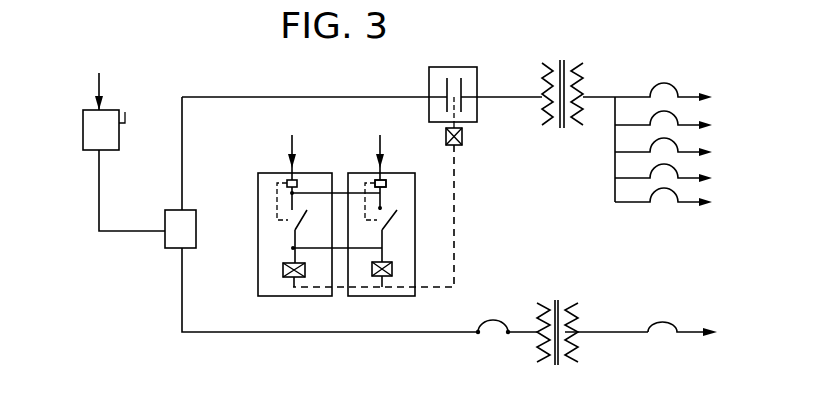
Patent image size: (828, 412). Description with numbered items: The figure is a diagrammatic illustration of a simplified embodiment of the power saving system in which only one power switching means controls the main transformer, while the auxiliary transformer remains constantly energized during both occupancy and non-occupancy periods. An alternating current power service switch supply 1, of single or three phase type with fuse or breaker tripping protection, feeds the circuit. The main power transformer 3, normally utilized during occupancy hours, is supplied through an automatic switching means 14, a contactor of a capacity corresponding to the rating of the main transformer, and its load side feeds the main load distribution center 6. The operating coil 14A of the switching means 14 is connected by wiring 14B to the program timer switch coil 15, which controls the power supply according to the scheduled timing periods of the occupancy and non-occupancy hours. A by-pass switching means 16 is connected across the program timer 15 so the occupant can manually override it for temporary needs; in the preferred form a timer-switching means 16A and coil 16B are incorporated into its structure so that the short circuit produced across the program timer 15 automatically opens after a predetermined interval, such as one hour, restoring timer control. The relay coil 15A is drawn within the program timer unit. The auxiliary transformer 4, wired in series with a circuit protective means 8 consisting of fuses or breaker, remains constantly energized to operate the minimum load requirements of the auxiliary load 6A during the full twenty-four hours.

The alternating current power service switch supply 1 is at (119, 139).
The automatic switching means 14 is at (428, 73).
The operating coil 14A is at (463, 136).
The wiring 14B is at (455, 219).
The program timer switch coil 15 is at (322, 172).
The first relay coil 15A is at (283, 264).
The by-pass switching means 16 is at (405, 160).
The timer-switching means 16A is at (366, 194).
The coil 16B is at (388, 262).
The main power transformer 3 is at (578, 70).
The main load distribution center 6 is at (618, 97).
The circuit protective means 8 is at (506, 336).
The auxiliary transformer 4 is at (592, 341).
The auxiliary load 6A is at (650, 329).